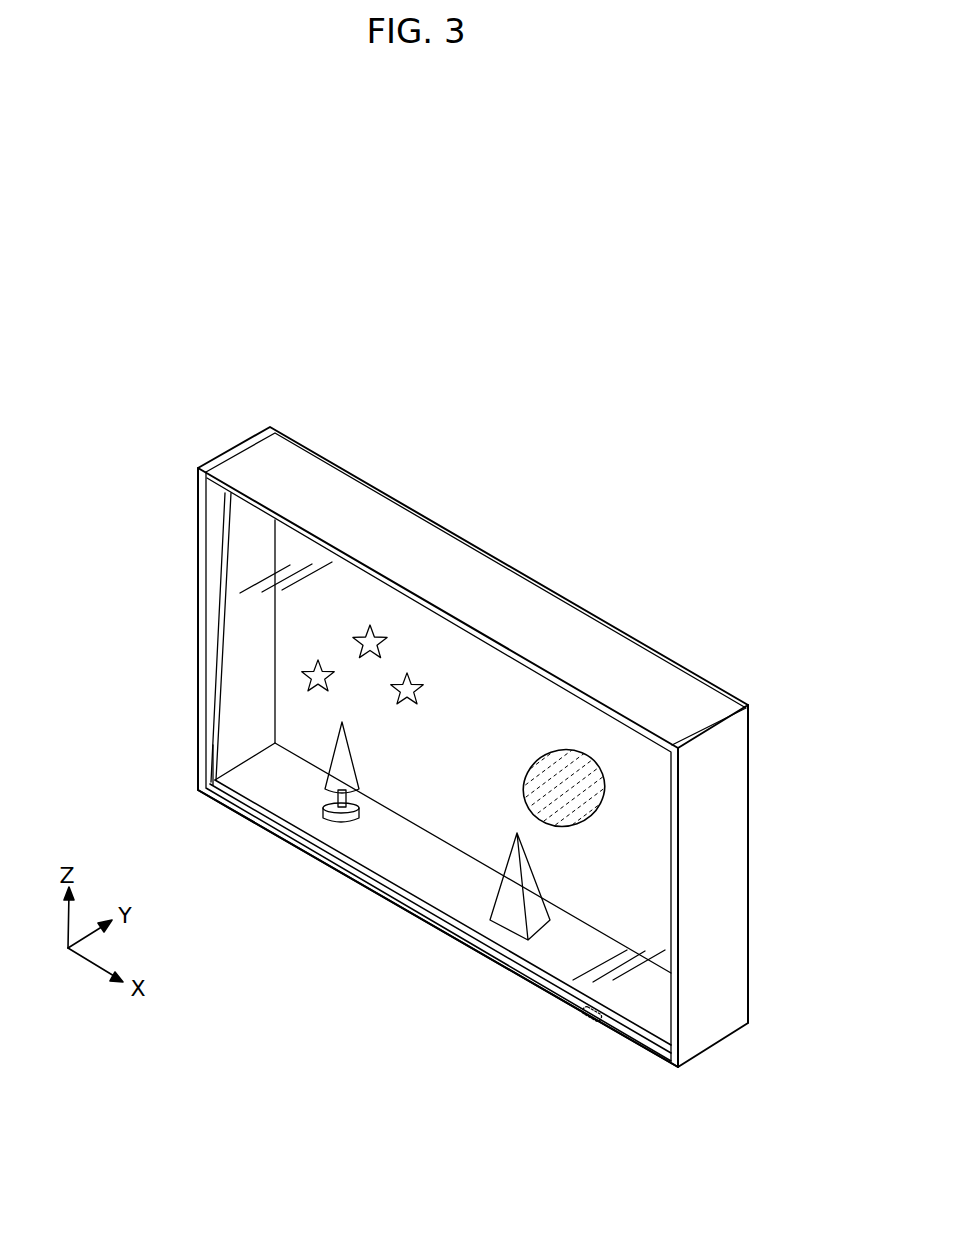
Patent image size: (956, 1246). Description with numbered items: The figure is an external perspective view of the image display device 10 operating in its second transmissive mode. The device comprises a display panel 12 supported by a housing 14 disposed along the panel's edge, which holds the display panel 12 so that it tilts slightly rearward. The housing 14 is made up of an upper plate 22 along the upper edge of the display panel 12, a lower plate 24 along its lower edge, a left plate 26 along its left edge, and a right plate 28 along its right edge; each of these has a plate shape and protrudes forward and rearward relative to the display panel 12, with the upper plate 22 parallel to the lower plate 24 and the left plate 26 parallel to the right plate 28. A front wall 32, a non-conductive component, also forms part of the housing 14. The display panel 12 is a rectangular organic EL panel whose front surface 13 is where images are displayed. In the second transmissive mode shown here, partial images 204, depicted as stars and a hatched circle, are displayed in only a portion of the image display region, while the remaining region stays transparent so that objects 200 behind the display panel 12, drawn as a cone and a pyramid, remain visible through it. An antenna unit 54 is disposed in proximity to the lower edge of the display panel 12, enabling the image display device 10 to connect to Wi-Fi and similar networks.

The image display device 10 is at (153, 348).
The display panel 12 is at (268, 796).
The front surface 13 is at (215, 797).
The housing 14 is at (699, 641).
The upper plate 22 is at (402, 533).
The lower plate 24 is at (500, 971).
The left plate 26 is at (212, 613).
The right plate 28 is at (720, 886).
The front wall 32 is at (353, 877).
The antenna unit 54 is at (592, 1015).
The objects 200 is at (330, 780).
The partial images 204 is at (373, 640).